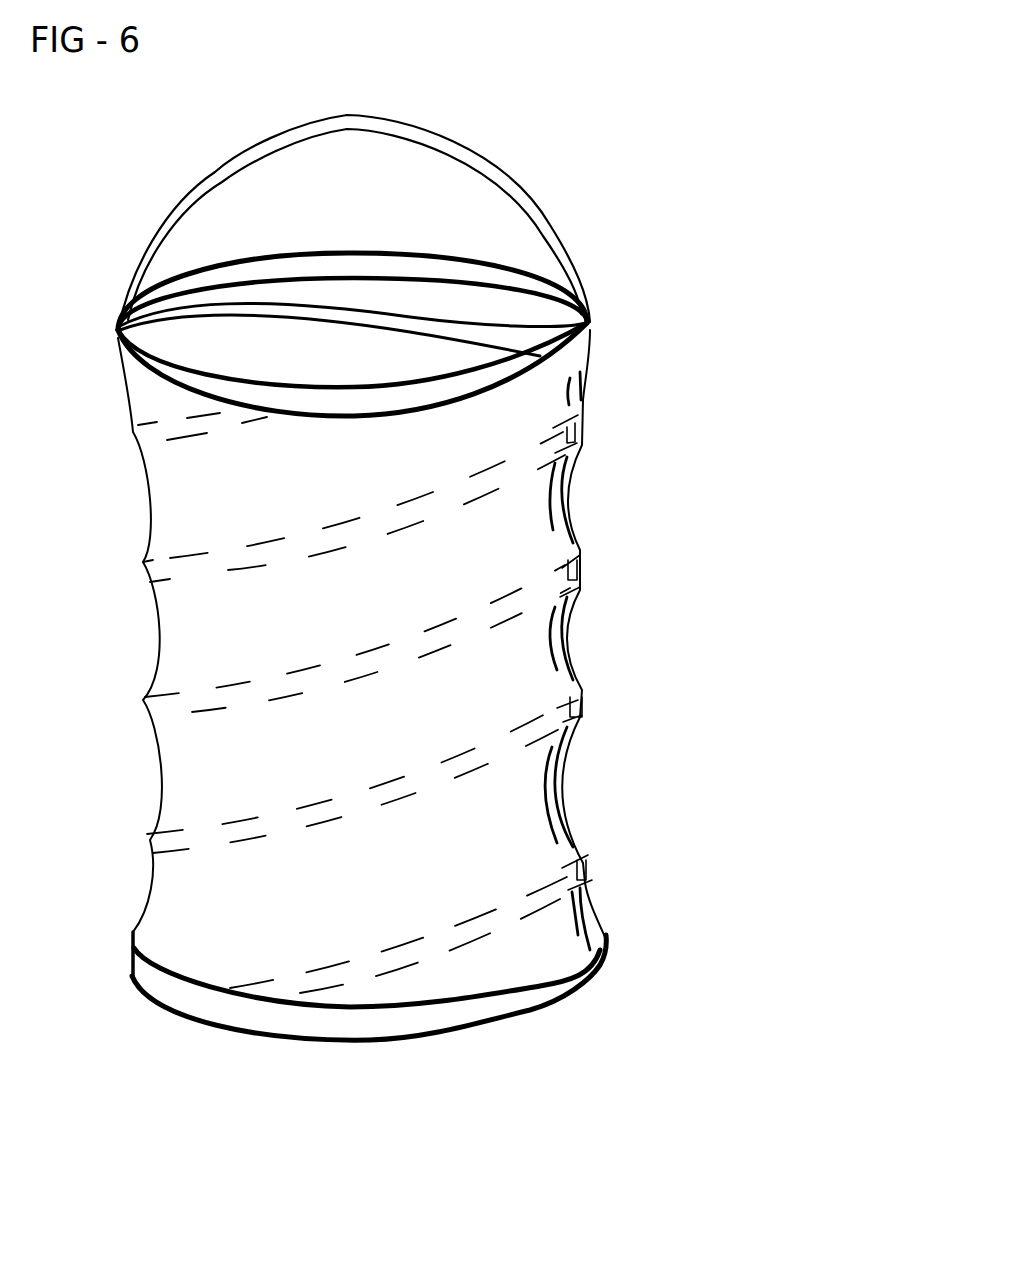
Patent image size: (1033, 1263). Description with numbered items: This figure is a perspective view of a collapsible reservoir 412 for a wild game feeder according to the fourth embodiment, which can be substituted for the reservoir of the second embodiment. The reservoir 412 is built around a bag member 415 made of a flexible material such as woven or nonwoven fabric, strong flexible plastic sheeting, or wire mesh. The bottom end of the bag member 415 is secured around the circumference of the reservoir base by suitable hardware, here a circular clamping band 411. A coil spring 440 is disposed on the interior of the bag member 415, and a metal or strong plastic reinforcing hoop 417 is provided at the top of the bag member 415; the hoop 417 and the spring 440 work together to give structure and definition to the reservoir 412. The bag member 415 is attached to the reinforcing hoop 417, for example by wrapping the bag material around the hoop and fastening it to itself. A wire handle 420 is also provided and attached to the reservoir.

The circular clamping band 411 is at (600, 957).
The collapsible reservoir 412 is at (507, 670).
The bag member 415 is at (358, 619).
The reinforcing hoop 417 is at (592, 356).
The wire handle 420 is at (210, 178).
The coil spring 440 is at (390, 310).